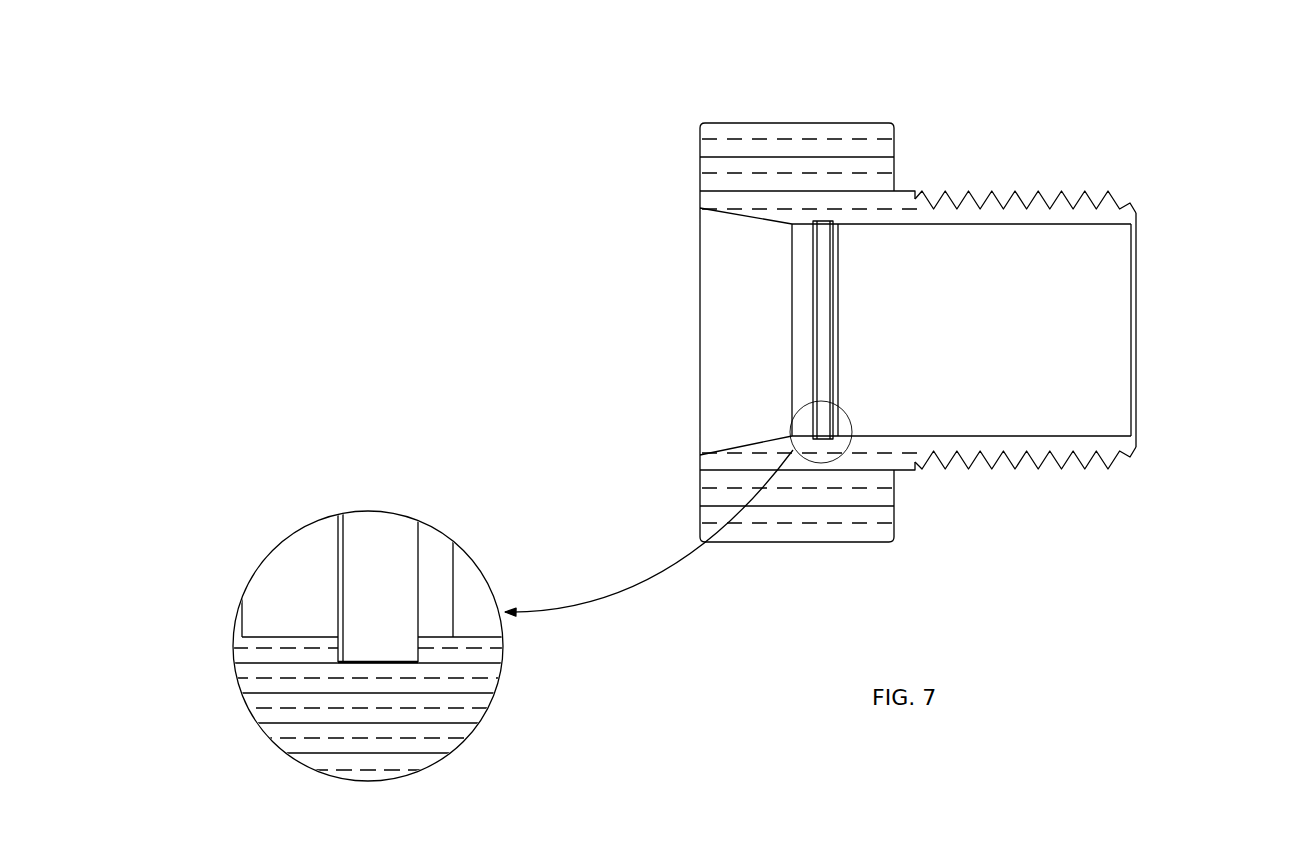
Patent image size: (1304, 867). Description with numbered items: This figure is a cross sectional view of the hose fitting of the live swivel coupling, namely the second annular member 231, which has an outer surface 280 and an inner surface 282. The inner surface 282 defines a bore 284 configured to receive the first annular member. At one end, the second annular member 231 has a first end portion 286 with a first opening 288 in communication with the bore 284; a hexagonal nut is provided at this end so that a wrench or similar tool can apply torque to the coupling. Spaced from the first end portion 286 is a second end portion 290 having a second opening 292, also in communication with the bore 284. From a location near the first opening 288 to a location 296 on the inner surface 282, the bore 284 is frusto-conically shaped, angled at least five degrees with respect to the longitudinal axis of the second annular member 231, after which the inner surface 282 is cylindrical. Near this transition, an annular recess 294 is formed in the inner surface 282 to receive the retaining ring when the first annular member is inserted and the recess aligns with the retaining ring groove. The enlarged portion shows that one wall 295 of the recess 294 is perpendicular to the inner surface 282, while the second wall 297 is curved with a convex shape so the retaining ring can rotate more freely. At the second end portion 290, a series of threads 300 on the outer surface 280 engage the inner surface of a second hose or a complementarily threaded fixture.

The second annular member 231 is at (807, 100).
The outer surface 280 is at (975, 168).
The inner surface 282 is at (930, 232).
The bore 284 is at (1015, 370).
The first end portion 286 is at (703, 113).
The first opening 288 is at (687, 282).
The second end portion 290 is at (1135, 213).
The second opening 292 is at (1140, 305).
The annular recess 294 is at (830, 442).
The wall of recess 295 is at (338, 648).
The location on inner surface 296 is at (794, 225).
The second wall 297 is at (418, 662).
The threads 300 is at (1052, 183).